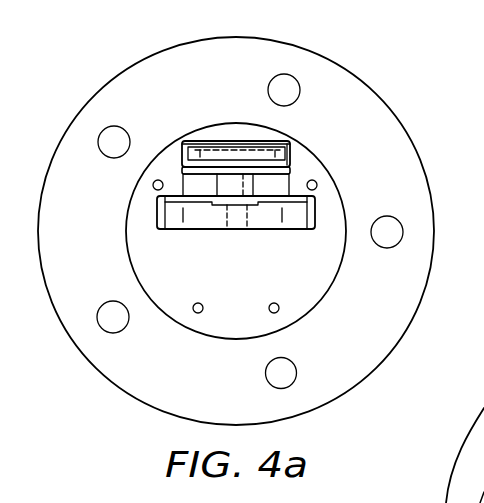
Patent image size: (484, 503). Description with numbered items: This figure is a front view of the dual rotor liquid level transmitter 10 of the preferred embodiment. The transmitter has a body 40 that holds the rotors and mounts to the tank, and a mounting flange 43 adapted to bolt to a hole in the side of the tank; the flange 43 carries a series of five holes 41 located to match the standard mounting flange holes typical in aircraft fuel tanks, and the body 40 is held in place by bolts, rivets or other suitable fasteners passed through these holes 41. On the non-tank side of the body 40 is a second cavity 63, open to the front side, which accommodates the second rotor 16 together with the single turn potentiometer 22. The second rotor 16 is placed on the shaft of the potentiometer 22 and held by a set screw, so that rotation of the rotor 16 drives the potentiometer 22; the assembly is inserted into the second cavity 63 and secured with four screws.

The liquid level transmitter 10 is at (101, 71).
The second rotor 16 is at (205, 222).
The potentiometer 22 is at (265, 127).
The body 40 is at (388, 102).
The holes 41 is at (118, 138).
The mounting flange 43 is at (95, 220).
The second cavity 63 is at (291, 157).